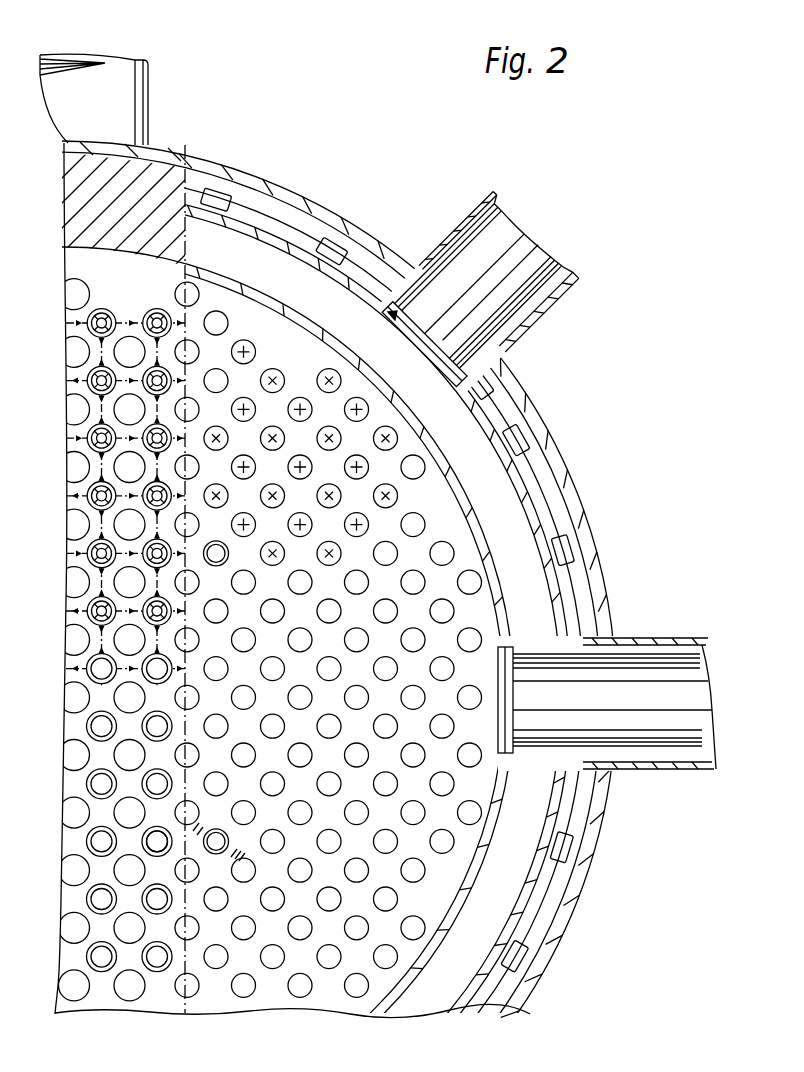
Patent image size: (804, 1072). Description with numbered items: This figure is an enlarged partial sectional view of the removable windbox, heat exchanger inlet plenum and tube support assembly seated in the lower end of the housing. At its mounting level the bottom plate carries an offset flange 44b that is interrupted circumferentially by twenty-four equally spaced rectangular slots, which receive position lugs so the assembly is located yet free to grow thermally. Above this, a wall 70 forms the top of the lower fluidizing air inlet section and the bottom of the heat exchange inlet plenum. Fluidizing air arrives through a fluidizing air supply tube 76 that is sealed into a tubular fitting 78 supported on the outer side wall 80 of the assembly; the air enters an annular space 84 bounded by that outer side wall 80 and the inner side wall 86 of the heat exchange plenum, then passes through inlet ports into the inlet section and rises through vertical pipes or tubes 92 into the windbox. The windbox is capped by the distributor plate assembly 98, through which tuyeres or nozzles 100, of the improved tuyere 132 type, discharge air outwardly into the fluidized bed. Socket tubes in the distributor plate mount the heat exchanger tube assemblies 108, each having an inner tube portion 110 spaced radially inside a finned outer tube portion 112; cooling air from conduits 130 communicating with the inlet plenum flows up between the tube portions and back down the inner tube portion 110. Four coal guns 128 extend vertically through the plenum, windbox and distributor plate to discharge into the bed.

The flange 44b is at (540, 492).
The wall 70 is at (425, 499).
The fluidizing air supply tube 76 is at (468, 243).
The tubular fitting 78 is at (390, 316).
The outer side wall 80 is at (500, 379).
The annular space 84 is at (320, 296).
The inner side wall 86 is at (497, 573).
The vertical pipes or tubes 92 is at (349, 532).
The distributor plate assembly 98 is at (186, 994).
The tuyeres or nozzles 100 is at (150, 332).
The heat exchanger tube assemblies 108 is at (188, 318).
The inner tube portion 110 is at (300, 397).
The outer tube portion 112 is at (67, 345).
The coal guns 128 is at (215, 566).
The conduits 130 is at (130, 82).
The tuyere 132 is at (160, 834).